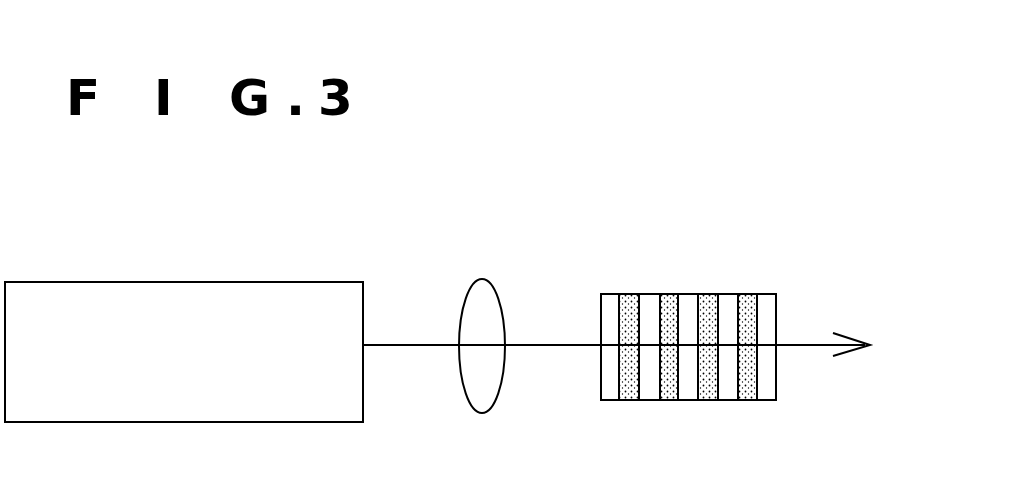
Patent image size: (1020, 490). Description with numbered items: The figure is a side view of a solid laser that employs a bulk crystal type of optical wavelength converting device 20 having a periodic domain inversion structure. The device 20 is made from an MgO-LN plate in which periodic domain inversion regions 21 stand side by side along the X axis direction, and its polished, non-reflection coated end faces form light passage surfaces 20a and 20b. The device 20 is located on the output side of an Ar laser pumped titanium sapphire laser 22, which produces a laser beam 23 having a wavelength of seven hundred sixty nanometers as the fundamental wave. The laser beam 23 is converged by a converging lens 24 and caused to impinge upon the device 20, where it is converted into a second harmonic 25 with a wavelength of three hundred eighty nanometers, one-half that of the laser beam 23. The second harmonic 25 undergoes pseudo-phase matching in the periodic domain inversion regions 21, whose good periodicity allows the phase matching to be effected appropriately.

The bulk crystal type of optical wavelength converting device 20 is at (690, 328).
The light passage surface 20a is at (601, 316).
The light passage surface 20b is at (776, 316).
The periodic domain inversion regions 21 is at (708, 383).
The Ar laser pumped titanium sapphire laser 22 is at (187, 282).
The laser beam 23 is at (412, 350).
The converging lens 24 is at (484, 280).
The second harmonic 25 is at (808, 350).